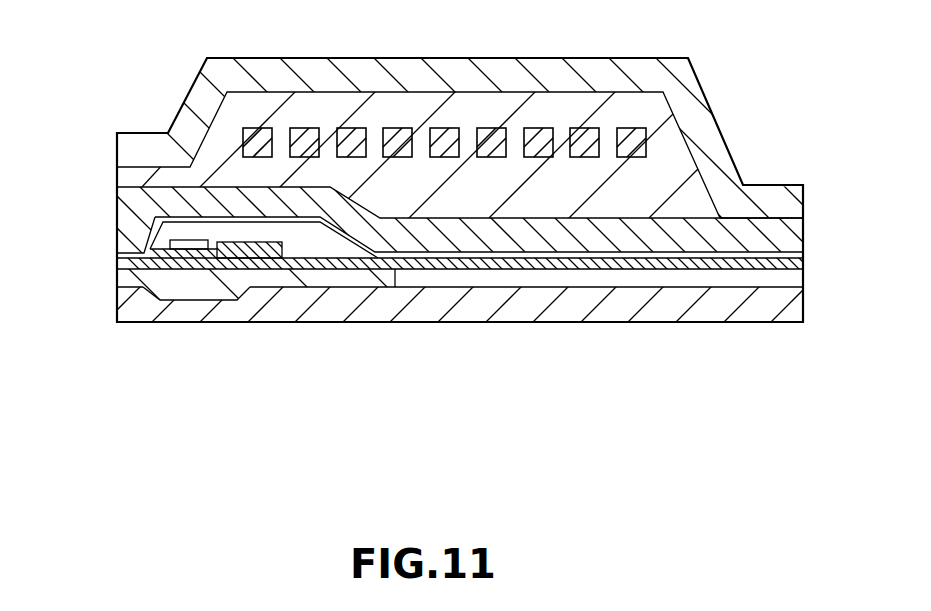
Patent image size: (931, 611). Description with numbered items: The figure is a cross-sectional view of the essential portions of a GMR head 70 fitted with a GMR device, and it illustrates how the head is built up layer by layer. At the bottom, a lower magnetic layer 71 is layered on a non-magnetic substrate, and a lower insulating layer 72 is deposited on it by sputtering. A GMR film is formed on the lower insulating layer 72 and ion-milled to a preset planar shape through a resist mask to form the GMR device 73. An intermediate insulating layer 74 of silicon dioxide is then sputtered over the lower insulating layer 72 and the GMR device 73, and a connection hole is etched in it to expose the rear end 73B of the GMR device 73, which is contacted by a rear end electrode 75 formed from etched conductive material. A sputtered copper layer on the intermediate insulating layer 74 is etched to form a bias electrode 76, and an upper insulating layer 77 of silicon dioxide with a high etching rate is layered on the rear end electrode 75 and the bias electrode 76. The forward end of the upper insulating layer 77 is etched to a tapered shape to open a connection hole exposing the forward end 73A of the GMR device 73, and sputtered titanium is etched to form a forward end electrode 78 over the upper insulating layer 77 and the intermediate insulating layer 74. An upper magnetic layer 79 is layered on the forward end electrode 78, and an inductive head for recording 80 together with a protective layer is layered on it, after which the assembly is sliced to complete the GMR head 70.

The GMR head 70 is at (112, 77).
The lower magnetic layer 71 is at (117, 323).
The lower insulating layer 72 is at (115, 300).
The GMR device 73 is at (170, 281).
The forward end of the GMR device 73A is at (115, 265).
The rear end of the GMR device 73B is at (221, 275).
The intermediate insulating layer 74 is at (157, 253).
The rear end electrode 75 is at (272, 262).
The bias electrode 76 is at (170, 243).
The upper insulating layer 77 is at (200, 220).
The forward end electrode 78 is at (150, 217).
The upper magnetic layer 79 is at (118, 193).
The inductive head for recording 80 is at (104, 156).